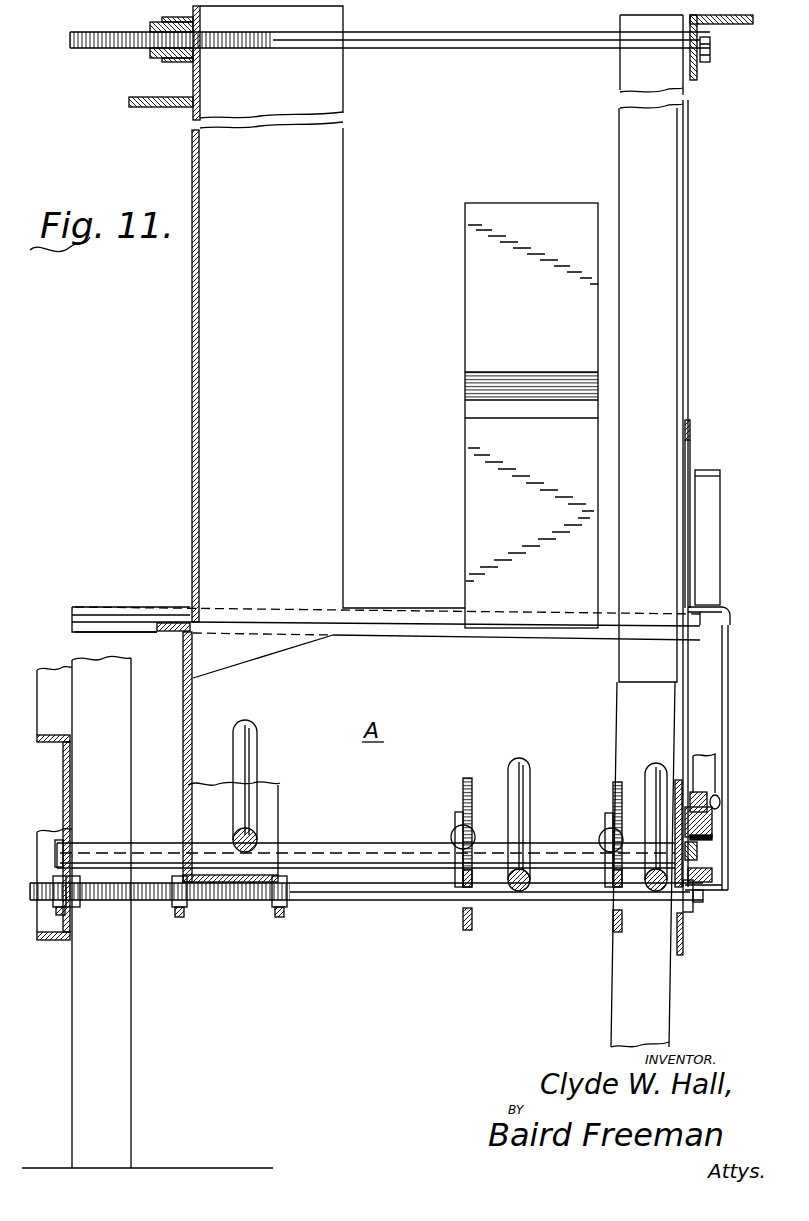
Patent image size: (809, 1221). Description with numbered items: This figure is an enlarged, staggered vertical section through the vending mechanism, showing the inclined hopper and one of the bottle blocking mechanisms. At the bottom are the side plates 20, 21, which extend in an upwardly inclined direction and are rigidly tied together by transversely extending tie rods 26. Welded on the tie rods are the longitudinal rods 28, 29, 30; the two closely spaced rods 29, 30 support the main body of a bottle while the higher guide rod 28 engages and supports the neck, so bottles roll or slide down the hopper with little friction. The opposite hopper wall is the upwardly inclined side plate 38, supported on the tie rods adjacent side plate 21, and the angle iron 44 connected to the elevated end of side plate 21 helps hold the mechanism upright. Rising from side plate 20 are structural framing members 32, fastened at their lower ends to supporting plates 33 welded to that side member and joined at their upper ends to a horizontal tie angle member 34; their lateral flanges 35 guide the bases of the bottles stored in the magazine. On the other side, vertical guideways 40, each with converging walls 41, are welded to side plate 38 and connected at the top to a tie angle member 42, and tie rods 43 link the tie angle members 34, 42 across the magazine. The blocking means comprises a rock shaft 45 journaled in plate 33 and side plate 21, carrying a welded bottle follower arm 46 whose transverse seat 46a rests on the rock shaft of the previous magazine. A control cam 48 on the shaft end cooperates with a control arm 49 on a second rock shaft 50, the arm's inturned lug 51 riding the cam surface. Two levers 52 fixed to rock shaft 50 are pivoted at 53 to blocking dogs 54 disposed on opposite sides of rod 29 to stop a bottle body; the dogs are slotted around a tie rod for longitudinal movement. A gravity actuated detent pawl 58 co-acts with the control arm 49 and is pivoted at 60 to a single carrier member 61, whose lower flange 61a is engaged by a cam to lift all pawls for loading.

The side plate 20 is at (661, 764).
The side plate 21 is at (63, 915).
The tie rod 26 is at (385, 905).
The guide rod 28 is at (258, 735).
The rod 29 is at (528, 762).
The rod 30 is at (673, 800).
The structural framing member 32 is at (655, 320).
The supporting plate 33 is at (692, 455).
The tie angle member 34 is at (724, 26).
The flange 35 is at (686, 356).
The side plate 38 is at (194, 708).
The guideway 40 is at (192, 384).
The converging wall 41 is at (325, 276).
The tie angle member 42 is at (163, 107).
The tie rod 43 is at (462, 36).
The angle iron 44 is at (115, 953).
The rock shaft 45 is at (385, 612).
The bottle follower arm 46 is at (465, 346).
The transverse seat 46a is at (465, 402).
The control cam 48 is at (705, 557).
The control arm 49 is at (728, 728).
The rock shaft 50 is at (345, 855).
The inturned lug 51 is at (718, 611).
The lever 52 is at (455, 822).
The pivot 53 is at (476, 837).
The blocking dog 54 is at (470, 785).
The gravity actuated detent pawl 58 is at (712, 822).
The pivot 60 is at (700, 801).
The carrier member 61 is at (695, 853).
The flange 61a is at (700, 767).